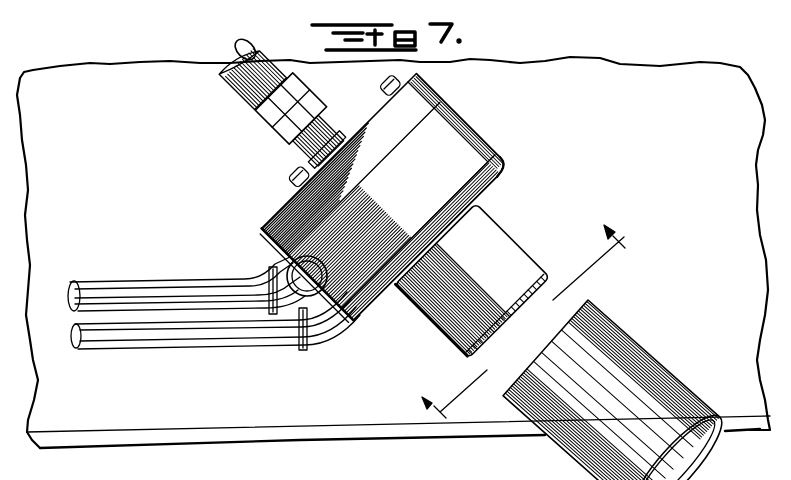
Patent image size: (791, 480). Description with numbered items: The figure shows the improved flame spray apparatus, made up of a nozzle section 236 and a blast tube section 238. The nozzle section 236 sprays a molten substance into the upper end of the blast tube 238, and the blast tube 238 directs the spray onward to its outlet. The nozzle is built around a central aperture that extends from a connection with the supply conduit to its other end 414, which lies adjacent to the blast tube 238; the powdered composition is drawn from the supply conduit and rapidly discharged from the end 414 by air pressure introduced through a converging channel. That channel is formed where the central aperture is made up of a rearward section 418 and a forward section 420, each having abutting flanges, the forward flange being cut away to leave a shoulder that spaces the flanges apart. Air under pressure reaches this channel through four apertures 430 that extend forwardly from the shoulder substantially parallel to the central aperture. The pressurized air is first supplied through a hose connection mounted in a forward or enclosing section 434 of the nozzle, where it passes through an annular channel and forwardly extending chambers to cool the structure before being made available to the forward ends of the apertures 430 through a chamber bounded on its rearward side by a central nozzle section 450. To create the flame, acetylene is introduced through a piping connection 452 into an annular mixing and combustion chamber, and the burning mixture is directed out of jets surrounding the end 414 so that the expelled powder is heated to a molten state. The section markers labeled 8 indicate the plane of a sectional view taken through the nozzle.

The nozzle section 236 is at (536, 111).
The blast tube section 238 is at (664, 369).
The end of the central aperture 414 is at (505, 352).
The rearward section 418 is at (365, 125).
The forward section 420 is at (427, 103).
The apertures 430 is at (285, 386).
The forward or enclosing section 434 is at (503, 167).
The central nozzle section 450 is at (463, 130).
The piping connection 452 is at (236, 279).
The section line 8- 8 is at (517, 314).